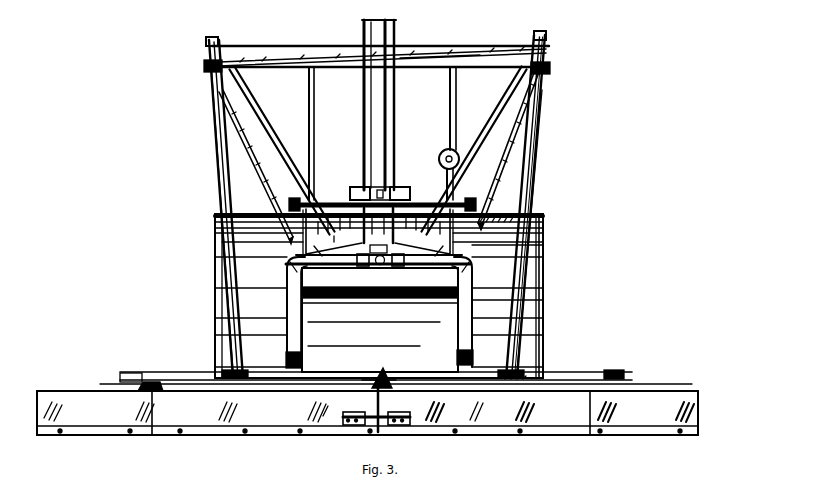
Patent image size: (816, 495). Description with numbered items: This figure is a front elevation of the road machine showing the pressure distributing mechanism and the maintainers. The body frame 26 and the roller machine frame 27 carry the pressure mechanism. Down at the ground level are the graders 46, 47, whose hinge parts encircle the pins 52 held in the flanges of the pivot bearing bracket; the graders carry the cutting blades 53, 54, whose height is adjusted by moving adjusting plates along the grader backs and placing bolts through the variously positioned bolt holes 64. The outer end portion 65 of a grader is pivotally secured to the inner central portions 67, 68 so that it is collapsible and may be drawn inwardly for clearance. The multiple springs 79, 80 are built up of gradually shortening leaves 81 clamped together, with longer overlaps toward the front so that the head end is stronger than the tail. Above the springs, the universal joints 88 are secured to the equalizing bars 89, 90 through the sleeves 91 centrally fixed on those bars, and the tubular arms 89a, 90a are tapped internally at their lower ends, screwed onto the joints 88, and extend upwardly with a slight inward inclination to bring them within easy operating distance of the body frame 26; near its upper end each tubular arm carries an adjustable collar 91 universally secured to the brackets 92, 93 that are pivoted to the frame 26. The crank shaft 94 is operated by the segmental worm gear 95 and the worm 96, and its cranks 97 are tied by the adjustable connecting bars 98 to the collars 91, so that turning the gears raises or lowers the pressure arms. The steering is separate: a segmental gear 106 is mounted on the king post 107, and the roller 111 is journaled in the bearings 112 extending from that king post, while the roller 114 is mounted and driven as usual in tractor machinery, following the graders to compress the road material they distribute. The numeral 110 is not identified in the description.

The body frame 26 is at (430, 57).
The bracket 92 is at (258, 60).
The sleeve / adjustable collar 91 is at (205, 66).
The leaves 81 is at (540, 64).
The equalizing bar 89 is at (216, 153).
The tubular arm 89a is at (222, 178).
The bracket 93 is at (220, 124).
The worm 96 is at (536, 52).
The adjustable connecting bar 98 is at (542, 143).
The equalizing bar 90 is at (541, 176).
The tubular arm 90a is at (545, 186).
The segmental worm gear 95 is at (455, 190).
The king post 107 is at (392, 186).
The segmental gear 106 is at (388, 196).
The crank shaft 94 is at (322, 203).
The roller machine frame 27 is at (285, 248).
The box frame 110 is at (216, 312).
The crank 97 is at (226, 213).
The roller 114 is at (543, 250).
The roller 111 is at (468, 316).
The bearing 112 is at (470, 350).
The universal joint 88 is at (224, 371).
The multiple spring 79 is at (140, 388).
The multiple spring 80 is at (626, 387).
The grader 46 is at (217, 438).
The outer end portion 65 is at (58, 438).
The bolt hole 64 is at (651, 438).
The cutting blade 53 is at (271, 436).
The inner central portion 67 is at (320, 438).
The inner central portion 68 is at (449, 437).
The cutting blade 54 is at (478, 436).
The grader 47 is at (532, 437).
The pin 52 is at (386, 416).